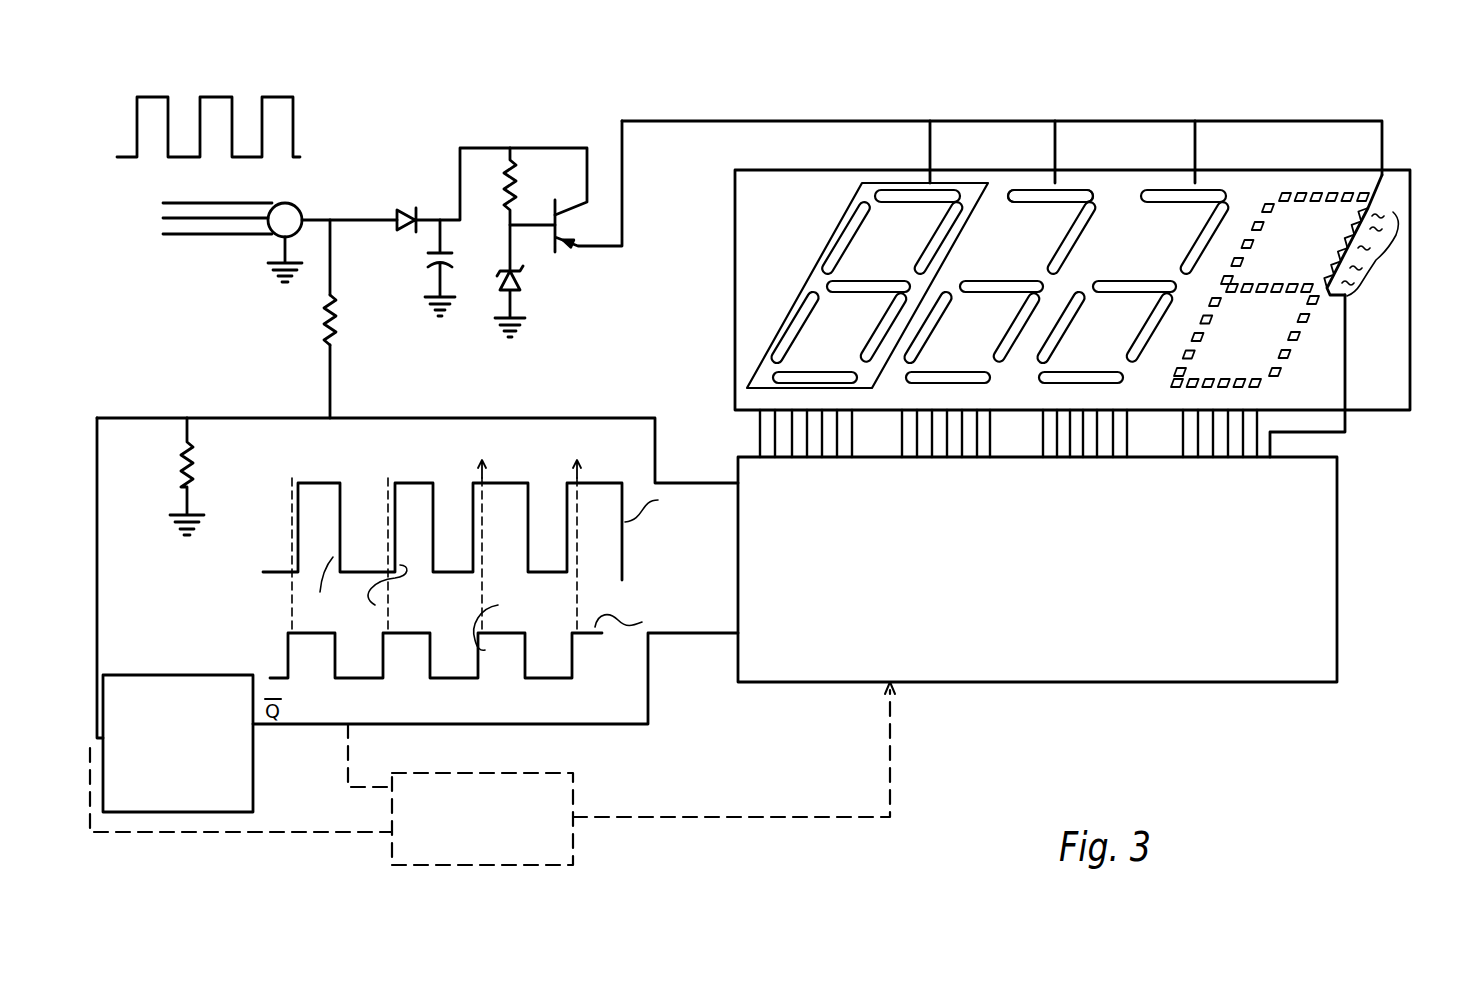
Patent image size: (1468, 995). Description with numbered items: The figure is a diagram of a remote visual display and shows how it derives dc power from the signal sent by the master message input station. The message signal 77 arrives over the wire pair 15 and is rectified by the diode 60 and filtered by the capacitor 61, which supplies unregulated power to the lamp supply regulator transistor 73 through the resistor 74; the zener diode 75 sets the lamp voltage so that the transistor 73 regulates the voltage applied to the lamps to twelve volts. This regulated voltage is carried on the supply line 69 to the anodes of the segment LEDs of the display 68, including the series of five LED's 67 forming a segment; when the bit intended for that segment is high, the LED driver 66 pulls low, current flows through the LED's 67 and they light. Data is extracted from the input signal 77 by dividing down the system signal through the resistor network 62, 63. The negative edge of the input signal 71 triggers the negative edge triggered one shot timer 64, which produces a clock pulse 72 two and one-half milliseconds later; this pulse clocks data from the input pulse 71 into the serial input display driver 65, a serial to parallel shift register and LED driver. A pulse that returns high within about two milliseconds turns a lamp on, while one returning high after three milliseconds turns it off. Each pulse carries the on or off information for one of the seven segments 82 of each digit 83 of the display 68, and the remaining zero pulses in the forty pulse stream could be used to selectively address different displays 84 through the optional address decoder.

The wire pair 15 is at (277, 205).
The diode 60 is at (416, 212).
The capacitor 61 is at (434, 270).
The resistor network 62 is at (323, 320).
The resistor network 63 is at (182, 452).
The one shot timer 64 is at (182, 672).
The serial input display driver 65 is at (1337, 561).
The LED driver 66 is at (1346, 432).
The LED's 67 is at (1376, 258).
The LED display 68 is at (1410, 185).
The +12 volt supply line 69 is at (1298, 123).
The input signal 71 is at (297, 515).
The clock pulse 72 is at (287, 639).
The lamp supply regulator transistor 73 is at (558, 224).
The resistor 74 is at (518, 188).
The zener diode 75 is at (521, 271).
The message signal 77 is at (297, 113).
The segments 82 is at (838, 252).
The digit 83 is at (850, 203).
The displays 84 is at (573, 848).